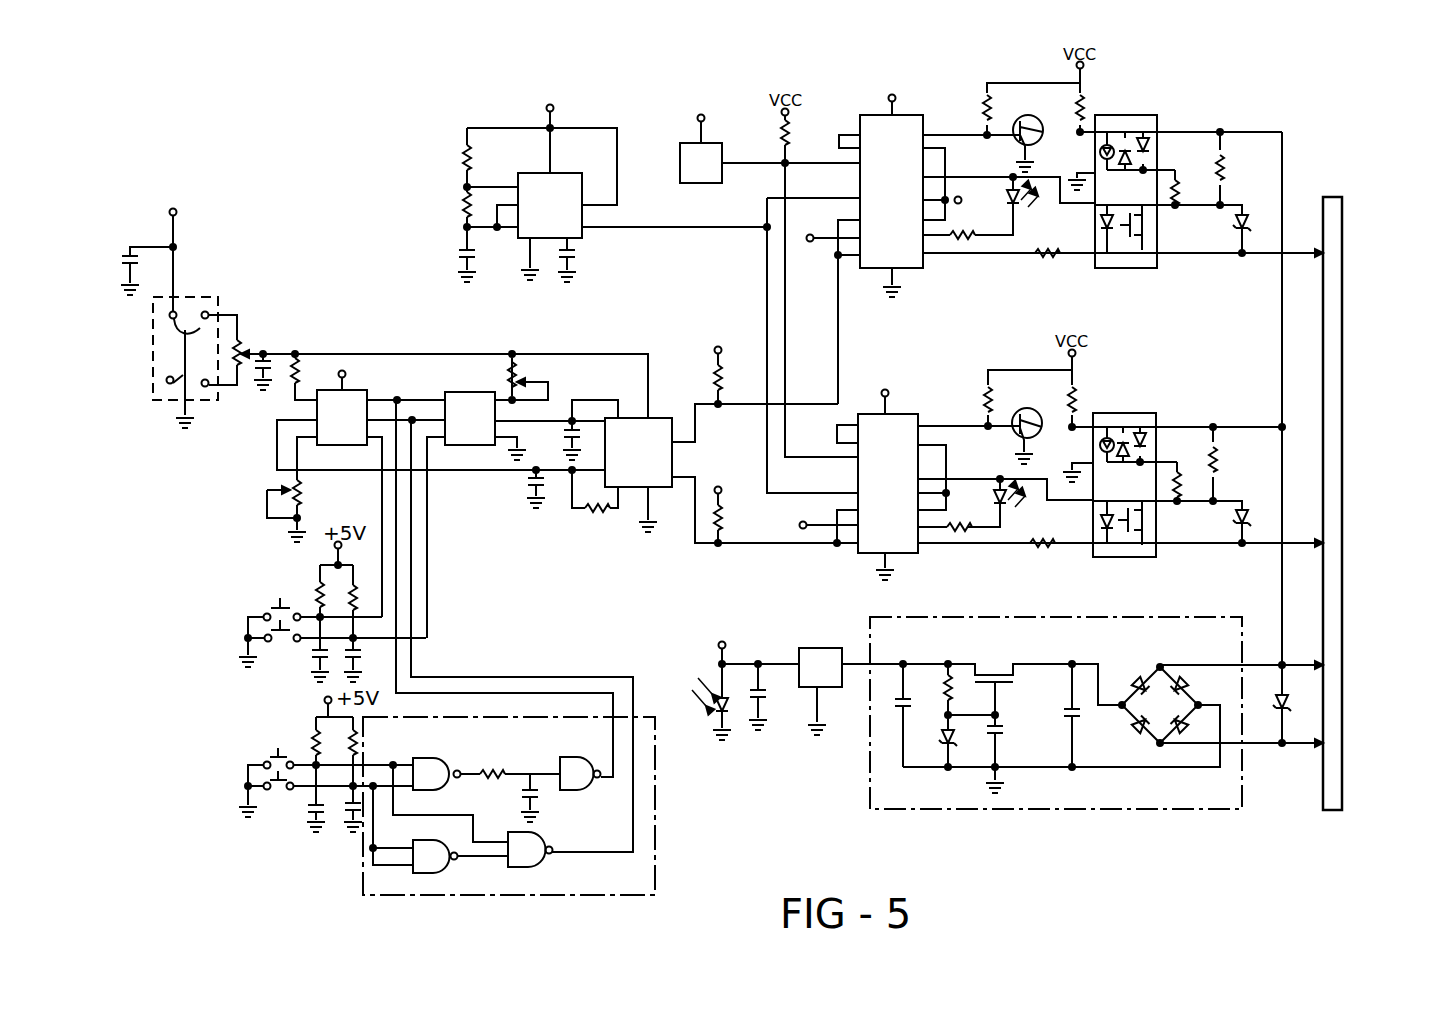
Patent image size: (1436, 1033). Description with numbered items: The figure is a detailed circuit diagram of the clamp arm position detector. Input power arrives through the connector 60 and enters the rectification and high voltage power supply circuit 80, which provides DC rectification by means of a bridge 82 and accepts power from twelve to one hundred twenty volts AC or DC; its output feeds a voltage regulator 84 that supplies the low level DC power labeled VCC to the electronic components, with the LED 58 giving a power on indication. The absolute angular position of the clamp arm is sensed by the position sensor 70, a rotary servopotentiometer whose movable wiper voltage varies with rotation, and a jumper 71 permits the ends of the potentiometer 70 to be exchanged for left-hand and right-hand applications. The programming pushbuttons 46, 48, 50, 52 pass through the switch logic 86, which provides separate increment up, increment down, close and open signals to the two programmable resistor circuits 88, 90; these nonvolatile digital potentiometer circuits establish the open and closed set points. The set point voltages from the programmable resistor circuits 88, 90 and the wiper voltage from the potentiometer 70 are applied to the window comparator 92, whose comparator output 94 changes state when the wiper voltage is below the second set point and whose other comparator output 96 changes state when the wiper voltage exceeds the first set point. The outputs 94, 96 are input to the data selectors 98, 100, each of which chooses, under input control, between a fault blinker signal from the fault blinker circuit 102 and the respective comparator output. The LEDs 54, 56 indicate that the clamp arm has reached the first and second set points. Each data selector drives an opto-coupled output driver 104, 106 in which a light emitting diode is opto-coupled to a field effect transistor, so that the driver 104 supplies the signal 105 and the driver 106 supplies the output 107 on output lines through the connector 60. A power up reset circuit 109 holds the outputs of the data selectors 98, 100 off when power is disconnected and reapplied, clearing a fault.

The pushbutton 46 is at (262, 762).
The pushbutton 48 is at (264, 790).
The pushbutton 50 is at (270, 642).
The pushbutton 52 is at (258, 606).
The first LED 54 is at (1015, 212).
The third LED 56 is at (1013, 515).
The second LED 58 is at (735, 715).
The connector 60 is at (1336, 197).
The position sensor 70 is at (252, 340).
The jumper 71 is at (203, 325).
The rectification and high voltage power supply circuit 80 is at (1097, 812).
The bridge 82 is at (1163, 746).
The voltage regulator 84 is at (815, 647).
The switch logic 86 is at (655, 848).
The programmable resistor circuit 88 is at (357, 388).
The programmable resistor circuit 90 is at (453, 398).
The window comparator 92 is at (668, 414).
The comparator output 94 is at (733, 546).
The comparator output 96 is at (748, 402).
The data selector 98 is at (920, 415).
The data selector 100 is at (873, 128).
The fault blinker circuit 102 is at (530, 182).
The output driver 104 is at (1145, 410).
The signal 105 is at (1256, 548).
The output driver 106 is at (1192, 85).
The output 107 is at (1258, 256).
The power up reset circuit 109 is at (690, 165).